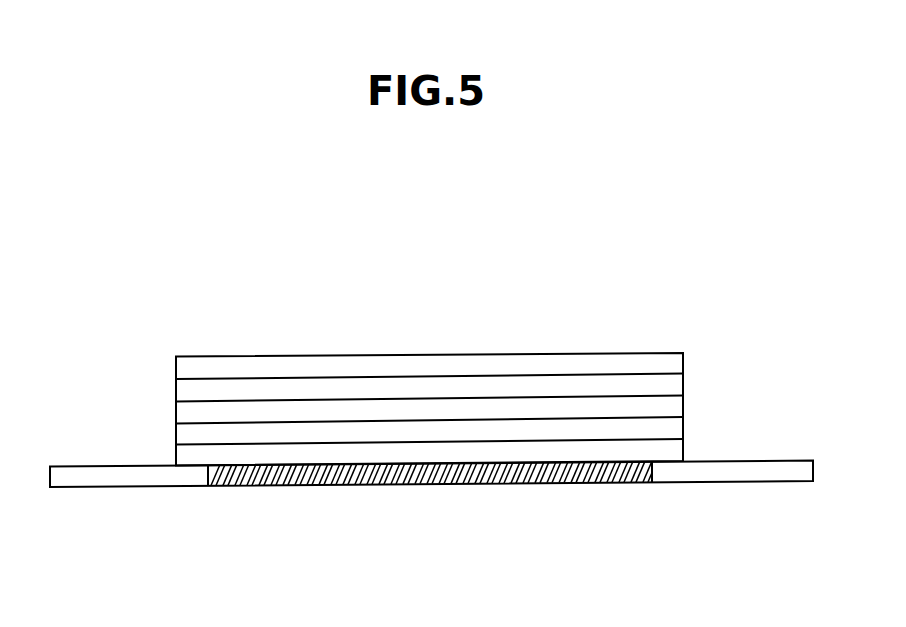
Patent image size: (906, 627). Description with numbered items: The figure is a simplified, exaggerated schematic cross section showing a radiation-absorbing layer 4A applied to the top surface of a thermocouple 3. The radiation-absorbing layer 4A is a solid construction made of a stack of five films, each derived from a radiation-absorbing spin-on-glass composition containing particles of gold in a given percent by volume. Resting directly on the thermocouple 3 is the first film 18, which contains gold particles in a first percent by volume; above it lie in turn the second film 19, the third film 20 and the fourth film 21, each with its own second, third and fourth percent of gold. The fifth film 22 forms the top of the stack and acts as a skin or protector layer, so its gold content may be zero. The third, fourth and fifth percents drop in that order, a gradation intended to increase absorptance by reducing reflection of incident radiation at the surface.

The radiation-absorbing layer 4A is at (417, 388).
The fifth film 22 is at (673, 361).
The fourth film 21 is at (673, 383).
The third film 20 is at (673, 405).
The second film 19 is at (673, 427).
The first film 18 is at (673, 449).
The thermocouple 3 is at (440, 497).